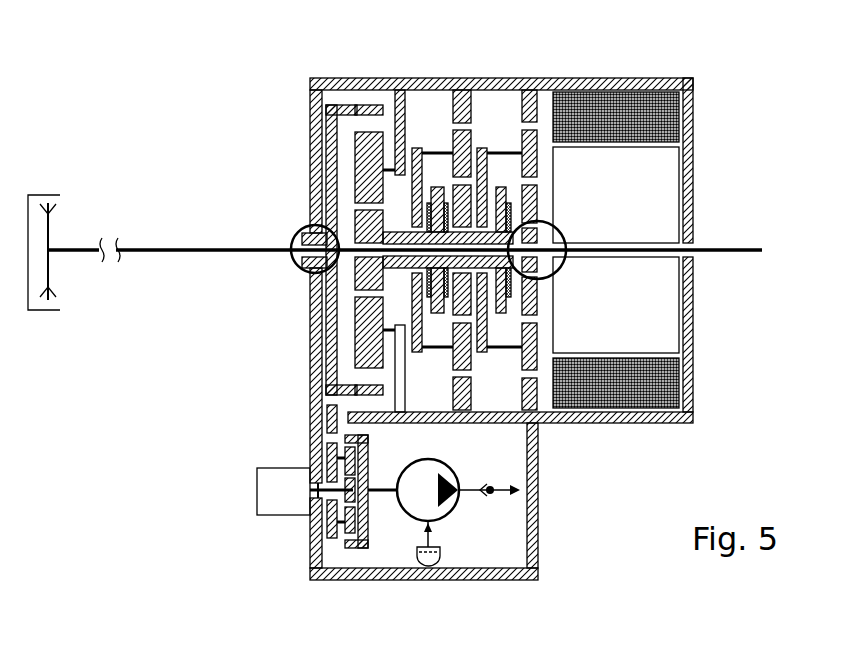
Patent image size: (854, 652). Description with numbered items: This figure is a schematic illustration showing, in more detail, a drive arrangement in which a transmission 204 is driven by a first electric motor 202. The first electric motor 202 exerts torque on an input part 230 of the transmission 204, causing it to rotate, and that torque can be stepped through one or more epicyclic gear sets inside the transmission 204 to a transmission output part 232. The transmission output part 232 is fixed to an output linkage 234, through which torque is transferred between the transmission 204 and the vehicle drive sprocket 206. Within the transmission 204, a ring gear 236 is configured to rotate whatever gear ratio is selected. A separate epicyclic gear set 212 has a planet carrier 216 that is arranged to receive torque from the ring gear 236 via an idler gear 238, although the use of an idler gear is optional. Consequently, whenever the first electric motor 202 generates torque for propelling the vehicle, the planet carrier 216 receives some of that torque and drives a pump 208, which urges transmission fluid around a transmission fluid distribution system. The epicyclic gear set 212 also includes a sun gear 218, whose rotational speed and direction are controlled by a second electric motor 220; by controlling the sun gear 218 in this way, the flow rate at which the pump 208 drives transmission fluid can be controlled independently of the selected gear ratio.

The first electric motor 202 is at (693, 58).
The transmission 204 is at (538, 58).
The vehicle drive sprocket 206 is at (49, 232).
The pump 208 is at (450, 512).
The epicyclic gear set 212 is at (375, 548).
The planet carrier 216 is at (328, 458).
The sun gear 218 is at (347, 498).
The second electric motor 220 is at (257, 482).
The input part 230 is at (563, 233).
The transmission output part 232 is at (297, 237).
The output linkage 234 is at (163, 253).
The ring gear 236 is at (333, 362).
The idler gear 238 is at (328, 416).